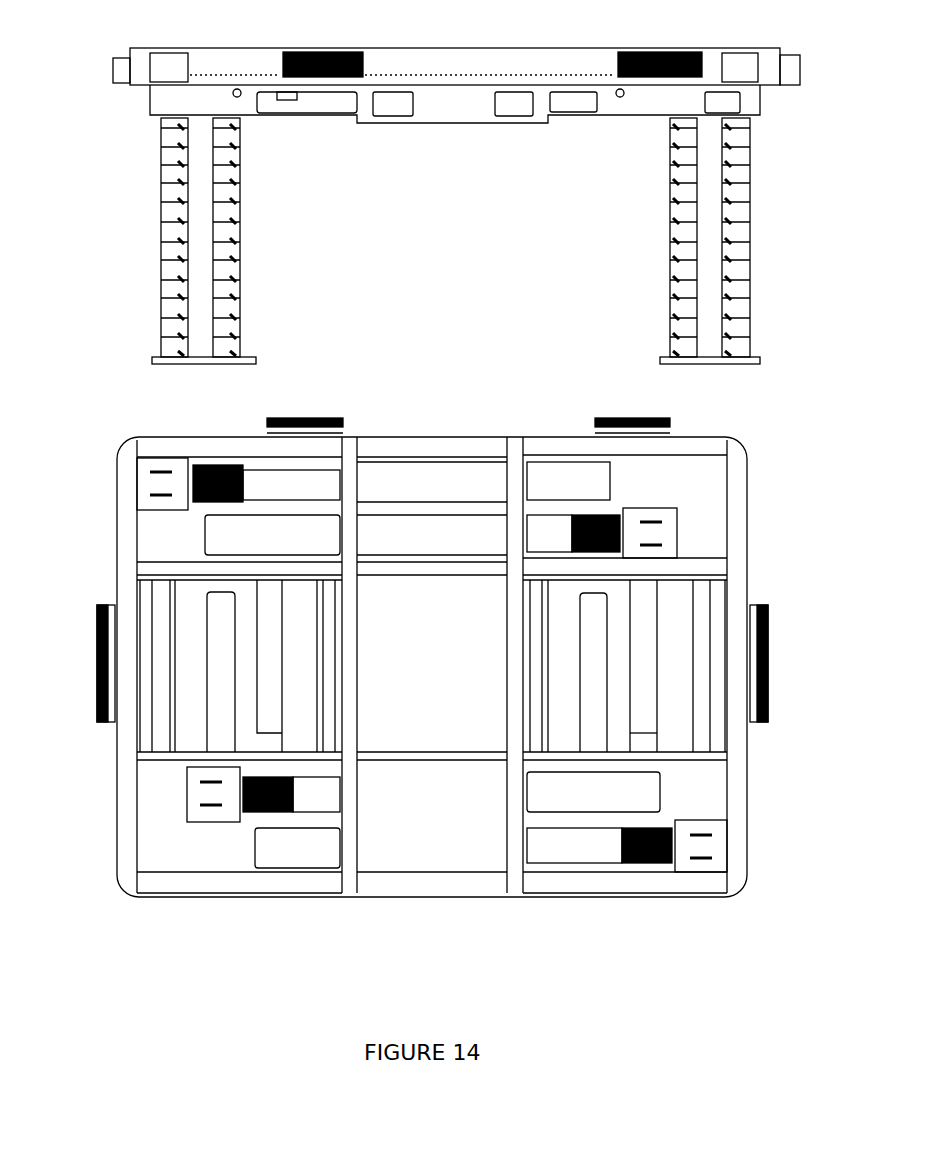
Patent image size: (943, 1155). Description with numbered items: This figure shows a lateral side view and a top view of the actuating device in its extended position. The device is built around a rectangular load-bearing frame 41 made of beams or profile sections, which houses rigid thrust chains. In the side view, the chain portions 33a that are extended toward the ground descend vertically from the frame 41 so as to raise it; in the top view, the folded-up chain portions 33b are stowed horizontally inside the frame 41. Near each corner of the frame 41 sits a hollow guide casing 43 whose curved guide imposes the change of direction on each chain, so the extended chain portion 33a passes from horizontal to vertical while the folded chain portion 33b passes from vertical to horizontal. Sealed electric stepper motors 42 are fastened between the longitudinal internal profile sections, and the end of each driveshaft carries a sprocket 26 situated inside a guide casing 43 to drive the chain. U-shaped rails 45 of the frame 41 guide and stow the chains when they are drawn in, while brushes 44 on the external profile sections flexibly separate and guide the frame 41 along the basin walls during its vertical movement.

The chain portion extended toward the ground 33a is at (750, 282).
The brush 44 is at (340, 420).
The electric stepper motor 42 is at (267, 710).
The sprocket 26 is at (240, 802).
The chain portion folded up toward the inside of the frame 33b is at (283, 812).
The U-shaped rail 45 is at (645, 792).
The guide casing 43 is at (707, 847).
The load-bearing frame 41 is at (560, 888).